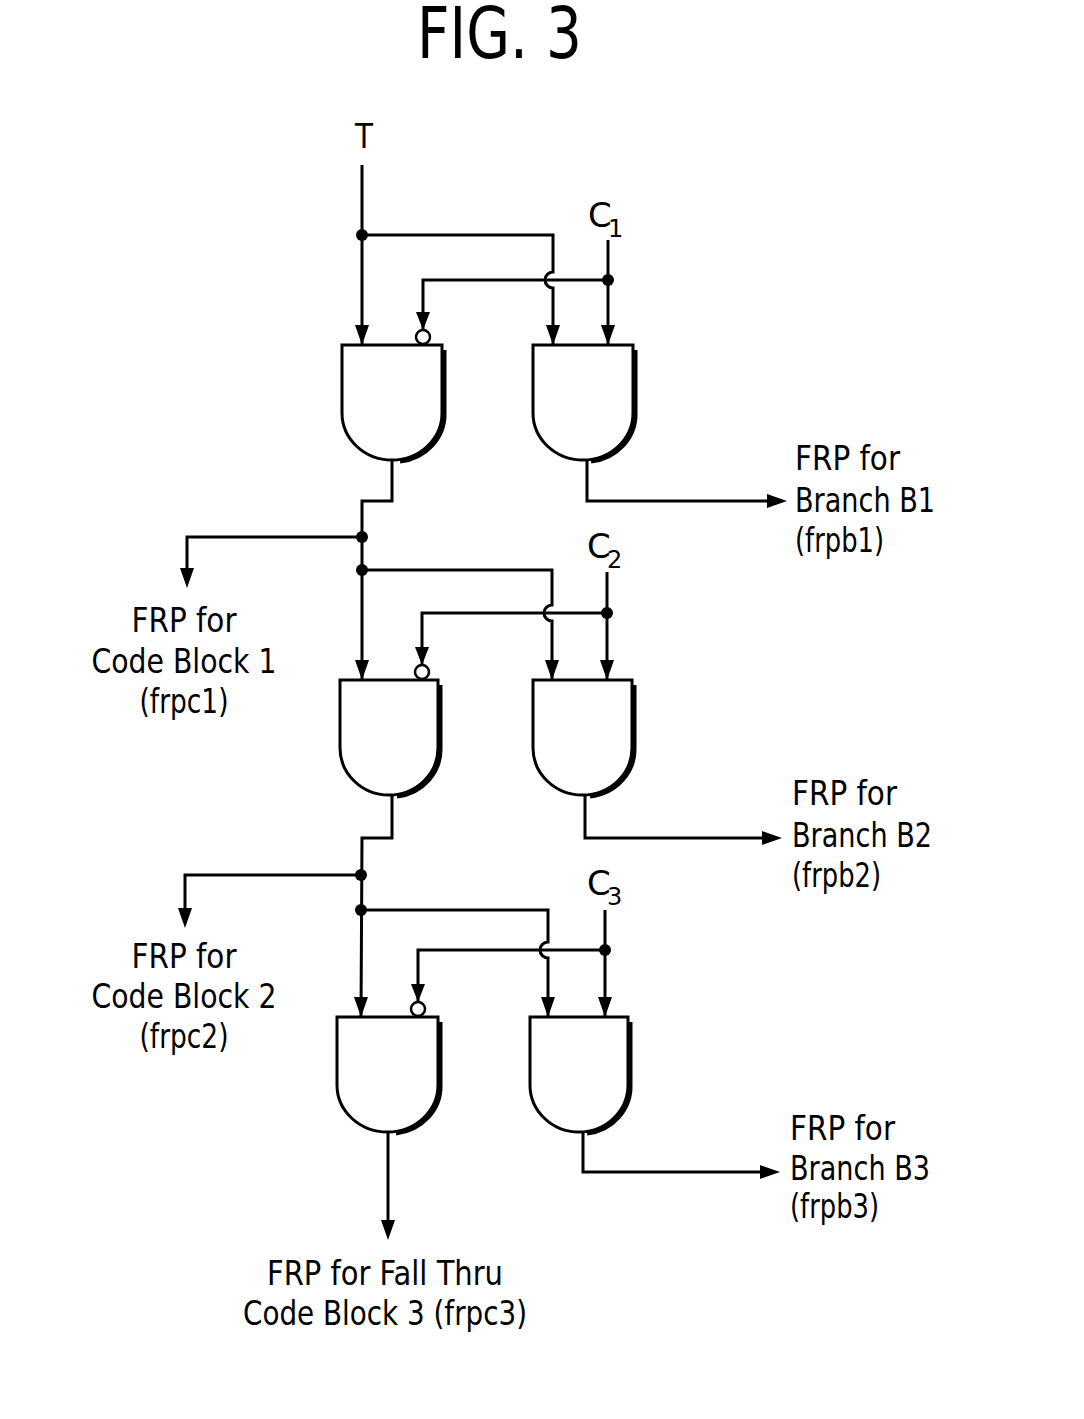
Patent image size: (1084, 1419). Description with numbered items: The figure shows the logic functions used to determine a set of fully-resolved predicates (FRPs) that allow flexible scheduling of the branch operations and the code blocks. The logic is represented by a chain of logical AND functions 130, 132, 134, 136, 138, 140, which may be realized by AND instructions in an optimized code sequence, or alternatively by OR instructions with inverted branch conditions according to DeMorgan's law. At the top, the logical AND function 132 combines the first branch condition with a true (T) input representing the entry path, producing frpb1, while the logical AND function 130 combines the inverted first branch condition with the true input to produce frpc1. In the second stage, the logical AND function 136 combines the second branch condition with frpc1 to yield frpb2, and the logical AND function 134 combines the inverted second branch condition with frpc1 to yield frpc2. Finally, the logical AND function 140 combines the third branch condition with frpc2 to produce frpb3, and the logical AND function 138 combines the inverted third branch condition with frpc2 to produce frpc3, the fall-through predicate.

The logical AND function 130 is at (365, 407).
The logical AND function 132 is at (556, 407).
The logical AND function 134 is at (362, 742).
The logical AND function 136 is at (555, 742).
The logical AND function 138 is at (361, 1079).
The logical AND function 140 is at (552, 1079).